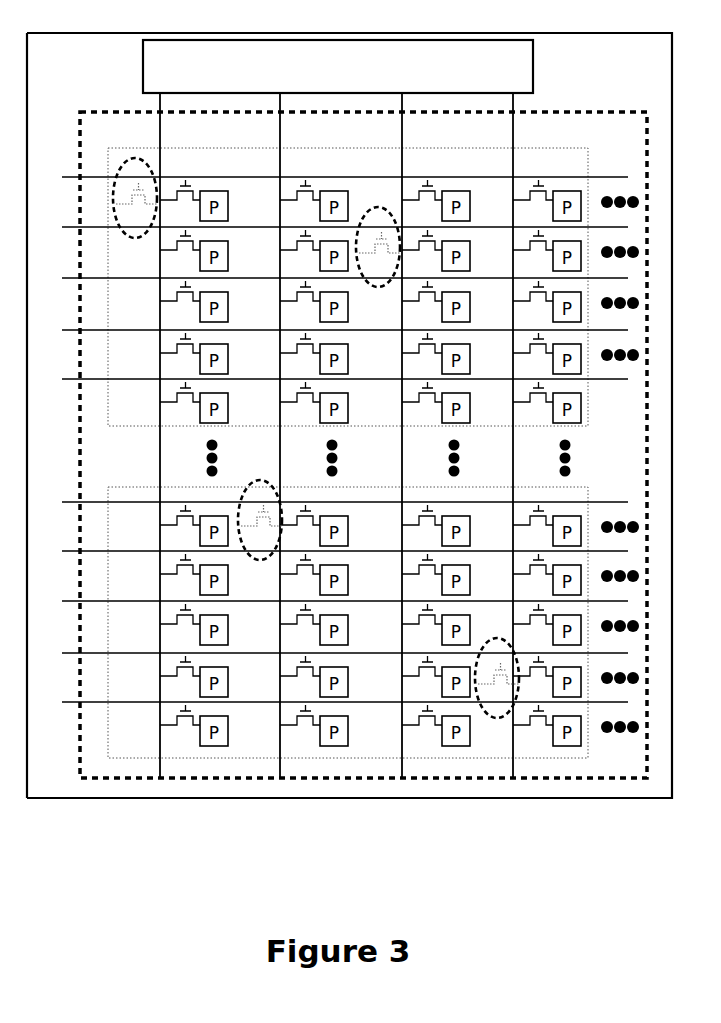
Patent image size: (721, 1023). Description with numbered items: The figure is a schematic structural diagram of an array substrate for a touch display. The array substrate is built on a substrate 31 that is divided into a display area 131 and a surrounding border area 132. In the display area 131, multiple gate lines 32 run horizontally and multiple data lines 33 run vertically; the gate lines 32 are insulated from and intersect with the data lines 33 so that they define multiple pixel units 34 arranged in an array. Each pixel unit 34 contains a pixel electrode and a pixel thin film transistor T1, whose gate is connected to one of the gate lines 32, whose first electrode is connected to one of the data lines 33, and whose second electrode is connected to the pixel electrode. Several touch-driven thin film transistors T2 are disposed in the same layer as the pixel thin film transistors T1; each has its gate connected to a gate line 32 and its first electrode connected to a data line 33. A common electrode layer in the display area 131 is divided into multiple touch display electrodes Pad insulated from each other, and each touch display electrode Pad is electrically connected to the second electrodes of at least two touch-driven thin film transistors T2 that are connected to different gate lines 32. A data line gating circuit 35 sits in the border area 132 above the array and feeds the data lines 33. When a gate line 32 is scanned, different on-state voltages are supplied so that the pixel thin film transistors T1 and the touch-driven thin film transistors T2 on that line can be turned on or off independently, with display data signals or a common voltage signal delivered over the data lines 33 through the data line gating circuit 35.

The substrate 31 is at (470, 810).
The border area 132 is at (44, 769).
The data line gating circuit 35 is at (552, 62).
The display area 131 is at (299, 798).
The pixel unit 34 is at (376, 745).
The gate line 32 is at (129, 724).
The data line 33 is at (524, 778).
The pixel thin film transistor T1 is at (183, 744).
The touch-driven thin film transistor T2 is at (113, 151).
The touch display electrode Pad is at (599, 770).